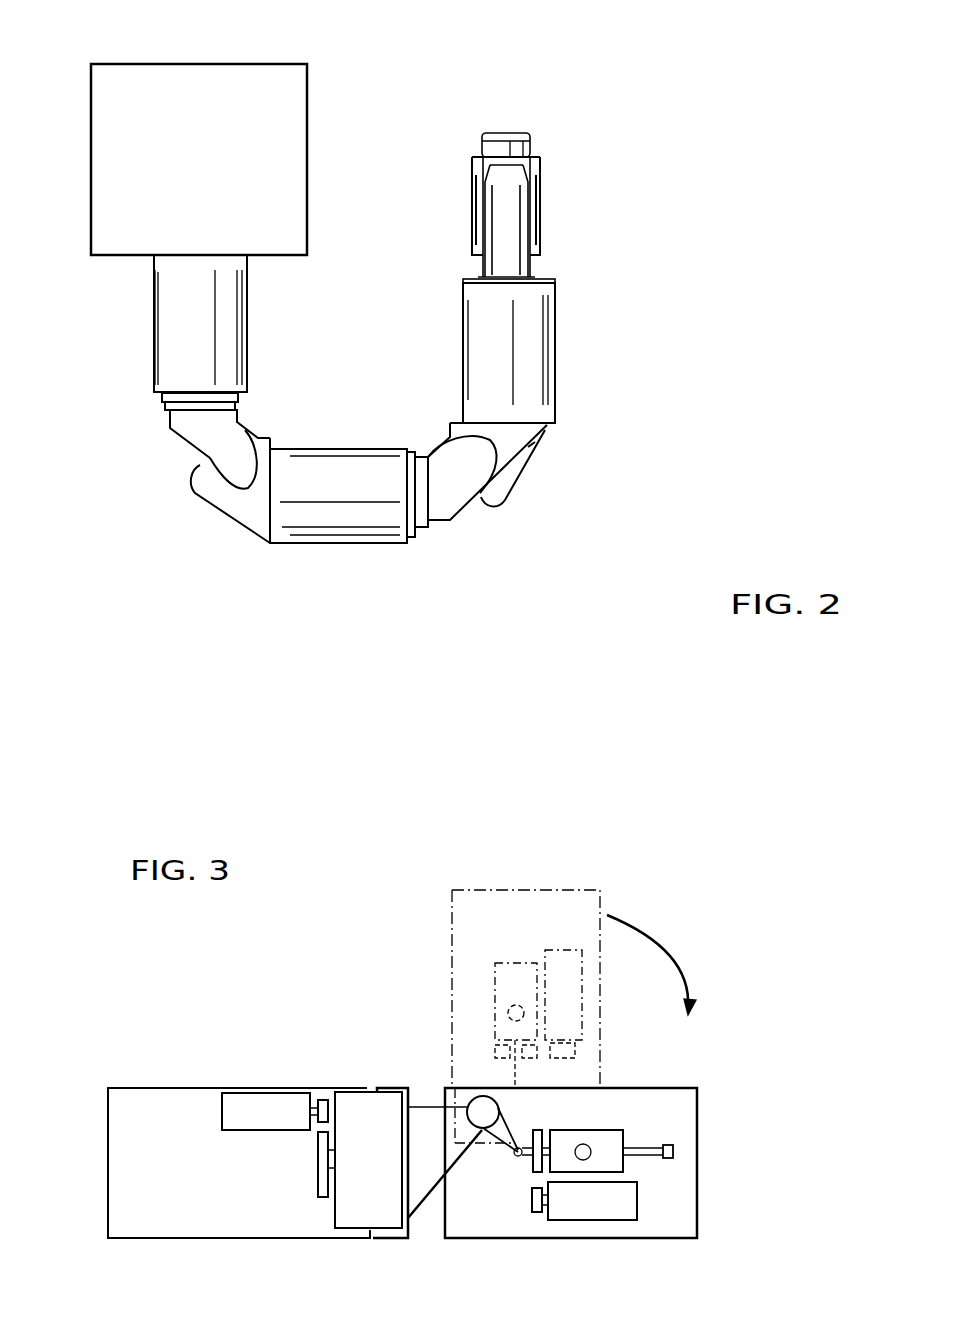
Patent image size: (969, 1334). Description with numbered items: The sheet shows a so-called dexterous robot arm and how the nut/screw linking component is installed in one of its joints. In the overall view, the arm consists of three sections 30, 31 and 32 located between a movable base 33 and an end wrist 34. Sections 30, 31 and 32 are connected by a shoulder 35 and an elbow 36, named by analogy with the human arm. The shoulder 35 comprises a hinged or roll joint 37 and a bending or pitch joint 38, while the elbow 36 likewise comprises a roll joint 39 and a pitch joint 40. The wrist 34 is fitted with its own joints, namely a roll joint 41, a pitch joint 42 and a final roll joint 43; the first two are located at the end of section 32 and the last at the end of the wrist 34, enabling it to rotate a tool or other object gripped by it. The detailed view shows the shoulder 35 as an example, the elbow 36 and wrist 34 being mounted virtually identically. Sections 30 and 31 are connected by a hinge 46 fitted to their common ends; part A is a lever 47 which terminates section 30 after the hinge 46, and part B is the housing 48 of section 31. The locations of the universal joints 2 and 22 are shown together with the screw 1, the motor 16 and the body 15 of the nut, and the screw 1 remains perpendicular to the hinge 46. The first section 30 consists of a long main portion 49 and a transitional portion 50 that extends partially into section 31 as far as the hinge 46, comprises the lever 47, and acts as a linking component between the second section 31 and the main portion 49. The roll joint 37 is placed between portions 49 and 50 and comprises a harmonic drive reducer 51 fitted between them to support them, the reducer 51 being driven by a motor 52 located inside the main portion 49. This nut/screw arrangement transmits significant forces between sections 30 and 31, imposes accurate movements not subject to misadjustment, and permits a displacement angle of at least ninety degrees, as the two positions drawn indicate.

In FIG. 3, the screw 1 is at (665, 1145).
In FIG. 3, the universal joint 2 is at (512, 1163).
In FIG. 3, the body of nut 15 is at (620, 1140).
In FIG. 3, the motor 16 is at (605, 1205).
In FIG. 3, the universal joint 22 is at (583, 1150).
In FIG. 2, the first section 30 is at (148, 327).
In FIG. 3, the first section 30 is at (215, 1163).
In FIG. 2, the second section 31 is at (367, 552).
In FIG. 3, the second section 31 is at (595, 885).
In FIG. 2, the third section 32 is at (570, 373).
In FIG. 2, the movable base 33 is at (172, 100).
In FIG. 2, the end wrist 34 is at (513, 269).
In FIG. 2, the shoulder 35 is at (181, 490).
In FIG. 3, the shoulder 35 is at (387, 1044).
In FIG. 2, the elbow 36 is at (535, 507).
In FIG. 2, the hinged joint 37 is at (163, 400).
In FIG. 3, the hinged joint 37 is at (368, 1243).
In FIG. 2, the bending joint 38 is at (250, 512).
In FIG. 3, the bending joint 38 is at (523, 1182).
In FIG. 2, the hinged joint 39 is at (413, 532).
In FIG. 2, the bending joint 40 is at (530, 440).
In FIG. 2, the roll joint 41 is at (535, 272).
In FIG. 2, the pitch joint 42 is at (540, 175).
In FIG. 2, the final roll joint 43 is at (482, 150).
In FIG. 3, the hinge 46 is at (478, 1100).
In FIG. 3, the lever 47 is at (568, 1118).
In FIG. 3, the housing 48 is at (685, 1240).
In FIG. 3, the main portion 49 is at (140, 1110).
In FIG. 3, the transitional portion 50 is at (428, 1182).
In FIG. 3, the harmonic drive 51 is at (360, 1110).
In FIG. 3, the motor 52 is at (243, 1110).